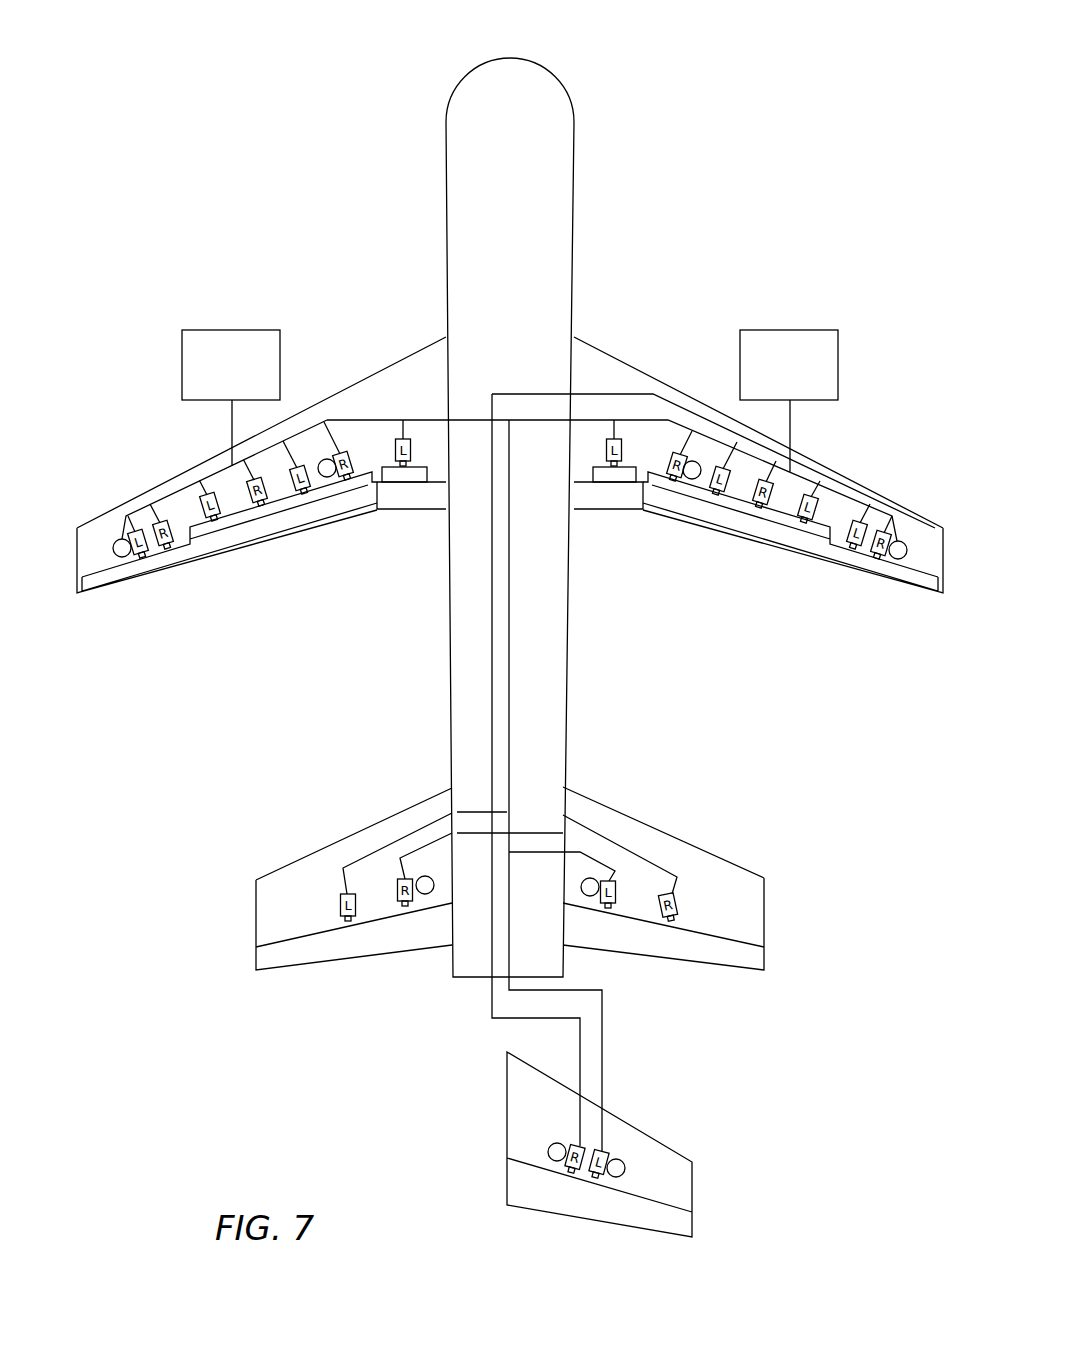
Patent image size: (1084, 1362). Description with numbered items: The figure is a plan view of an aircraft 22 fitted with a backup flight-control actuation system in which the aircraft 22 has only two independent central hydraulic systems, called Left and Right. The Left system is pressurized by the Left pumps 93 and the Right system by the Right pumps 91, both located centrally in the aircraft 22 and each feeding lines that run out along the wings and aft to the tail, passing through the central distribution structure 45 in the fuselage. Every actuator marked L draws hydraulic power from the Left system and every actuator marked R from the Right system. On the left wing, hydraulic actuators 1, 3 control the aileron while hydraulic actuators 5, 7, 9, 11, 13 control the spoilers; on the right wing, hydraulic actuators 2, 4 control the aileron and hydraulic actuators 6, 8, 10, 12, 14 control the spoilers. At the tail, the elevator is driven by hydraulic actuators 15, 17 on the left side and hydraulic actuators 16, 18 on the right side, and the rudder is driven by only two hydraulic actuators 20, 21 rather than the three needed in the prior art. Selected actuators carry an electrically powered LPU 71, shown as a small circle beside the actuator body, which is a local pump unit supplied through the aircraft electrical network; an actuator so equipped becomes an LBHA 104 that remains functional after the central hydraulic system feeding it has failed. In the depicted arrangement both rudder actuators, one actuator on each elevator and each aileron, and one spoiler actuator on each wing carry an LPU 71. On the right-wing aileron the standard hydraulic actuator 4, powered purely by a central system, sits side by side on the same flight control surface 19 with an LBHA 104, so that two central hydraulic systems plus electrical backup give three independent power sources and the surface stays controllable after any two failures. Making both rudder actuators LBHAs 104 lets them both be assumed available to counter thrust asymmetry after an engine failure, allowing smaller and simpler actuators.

The hydraulic actuator 1 is at (140, 562).
The hydraulic actuator 2 is at (882, 560).
The hydraulic actuator 3 is at (164, 552).
The hydraulic actuator 4 is at (857, 551).
The hydraulic actuator 5 is at (212, 524).
The hydraulic actuator 6 is at (807, 528).
The hydraulic actuator 7 is at (258, 508).
The hydraulic actuator 8 is at (763, 512).
The hydraulic actuator 9 is at (304, 496).
The hydraulic actuator 10 is at (720, 496).
The hydraulic actuator 11 is at (348, 482).
The hydraulic actuator 12 is at (677, 482).
The hydraulic actuator 13 is at (405, 482).
The hydraulic actuator 14 is at (614, 482).
The hydraulic actuator 15 is at (347, 927).
The hydraulic actuator 16 is at (672, 922).
The hydraulic actuator 17 is at (405, 908).
The hydraulic actuator 18 is at (615, 908).
The flight control surface 19 is at (915, 594).
The hydraulic actuator 20 is at (598, 1180).
The hydraulic actuator 21 is at (575, 1175).
The aircraft 22 is at (620, 66).
The center fuel manifold 45 is at (516, 394).
The LPU 71 is at (122, 539).
The Right pumps 91 is at (790, 330).
The Left pumps 93 is at (232, 330).
The LBHA 104 is at (898, 524).